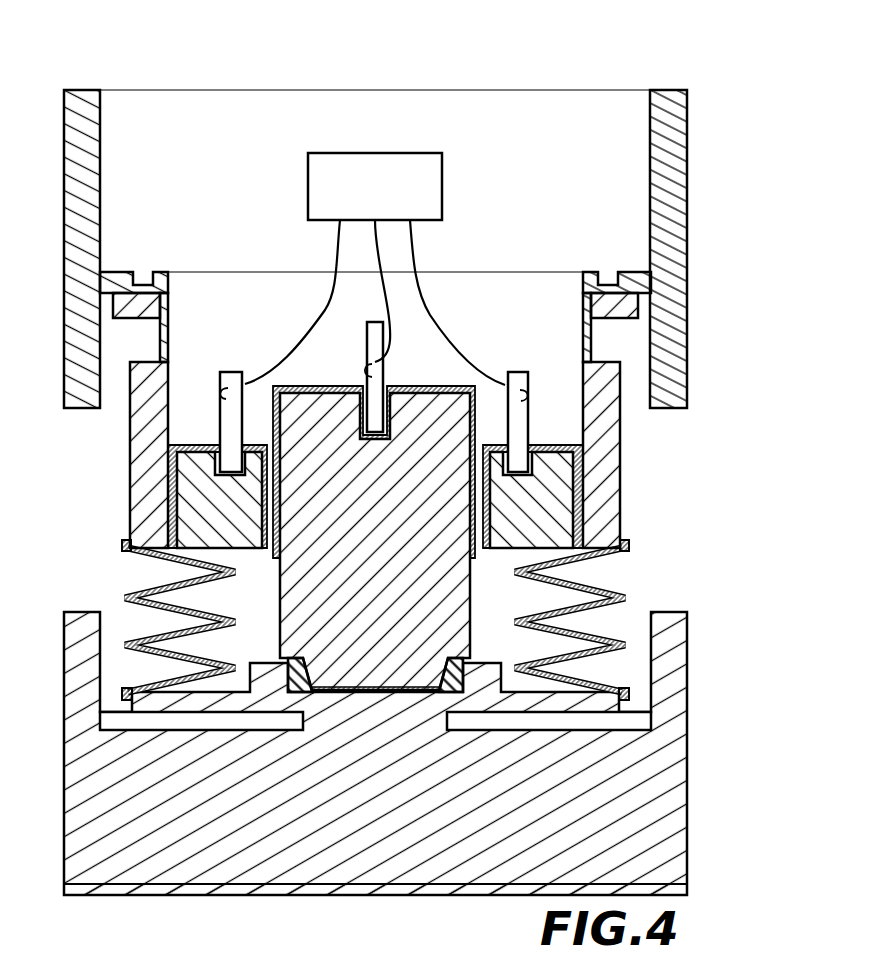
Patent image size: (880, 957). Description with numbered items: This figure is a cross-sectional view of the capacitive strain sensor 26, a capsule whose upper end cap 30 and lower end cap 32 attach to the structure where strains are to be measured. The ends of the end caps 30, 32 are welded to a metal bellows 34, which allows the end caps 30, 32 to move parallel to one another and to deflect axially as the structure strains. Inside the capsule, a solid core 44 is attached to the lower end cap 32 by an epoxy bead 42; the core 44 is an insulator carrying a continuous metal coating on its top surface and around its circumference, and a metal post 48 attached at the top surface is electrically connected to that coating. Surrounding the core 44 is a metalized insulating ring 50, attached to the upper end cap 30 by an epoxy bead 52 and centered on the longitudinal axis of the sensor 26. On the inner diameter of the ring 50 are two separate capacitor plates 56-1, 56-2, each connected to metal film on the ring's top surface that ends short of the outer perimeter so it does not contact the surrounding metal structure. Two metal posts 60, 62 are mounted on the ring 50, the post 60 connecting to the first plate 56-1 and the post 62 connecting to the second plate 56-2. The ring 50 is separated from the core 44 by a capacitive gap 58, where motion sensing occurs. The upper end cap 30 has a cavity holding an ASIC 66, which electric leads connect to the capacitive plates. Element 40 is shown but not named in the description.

The sensor 26 is at (696, 56).
The upper end cap 30 is at (668, 185).
The lower end cap 32 is at (666, 654).
The metal bellows 34 is at (124, 597).
The lower plate 40 is at (174, 705).
The epoxy bead 42 is at (450, 660).
The solid core 44 is at (440, 570).
The metal post 48 is at (372, 340).
The ring 50 is at (540, 497).
The epoxy bead 52 is at (580, 528).
The first plate 56-1 is at (574, 465).
The second plate 56-2 is at (258, 446).
The capacitive gap 58 is at (268, 439).
The metal post 60 is at (518, 378).
The metal post 62 is at (232, 372).
The Application-Specific Integrated Circuit (ASIC) 66 is at (437, 170).